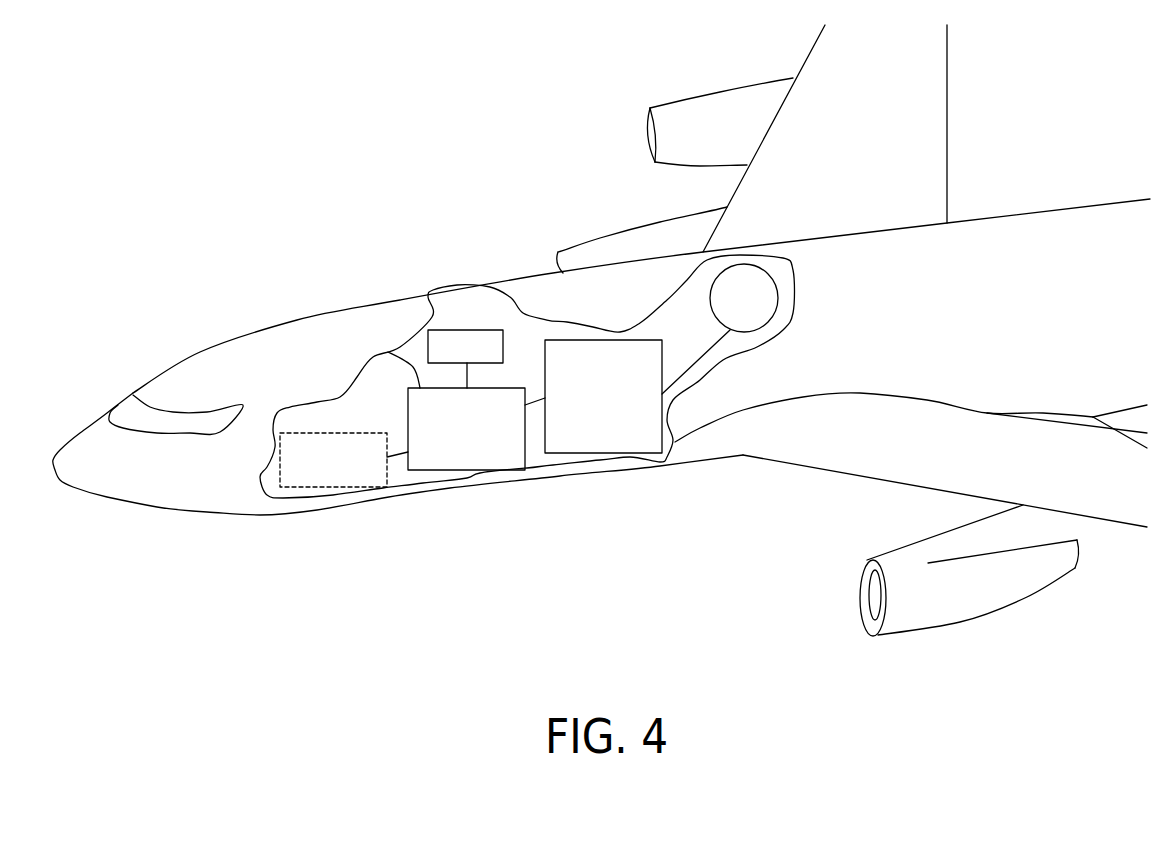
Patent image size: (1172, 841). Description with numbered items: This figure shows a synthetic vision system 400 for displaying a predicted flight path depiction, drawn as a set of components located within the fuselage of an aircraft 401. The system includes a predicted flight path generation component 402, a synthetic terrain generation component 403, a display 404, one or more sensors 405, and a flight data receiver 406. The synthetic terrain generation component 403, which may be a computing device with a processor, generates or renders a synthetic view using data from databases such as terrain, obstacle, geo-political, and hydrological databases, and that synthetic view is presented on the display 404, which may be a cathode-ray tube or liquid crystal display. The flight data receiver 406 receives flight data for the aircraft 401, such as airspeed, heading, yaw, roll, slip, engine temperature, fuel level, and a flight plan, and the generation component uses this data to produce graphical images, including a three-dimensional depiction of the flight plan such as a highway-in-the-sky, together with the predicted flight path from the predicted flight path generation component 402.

The synthetic vision system 400 is at (238, 152).
The aircraft 401 is at (200, 352).
The predicted flight path generation component 402 is at (607, 340).
The synthetic terrain generation component 403 is at (400, 347).
The display 404 is at (487, 331).
The sensors 405 is at (778, 297).
The flight data receiver 406 is at (280, 456).